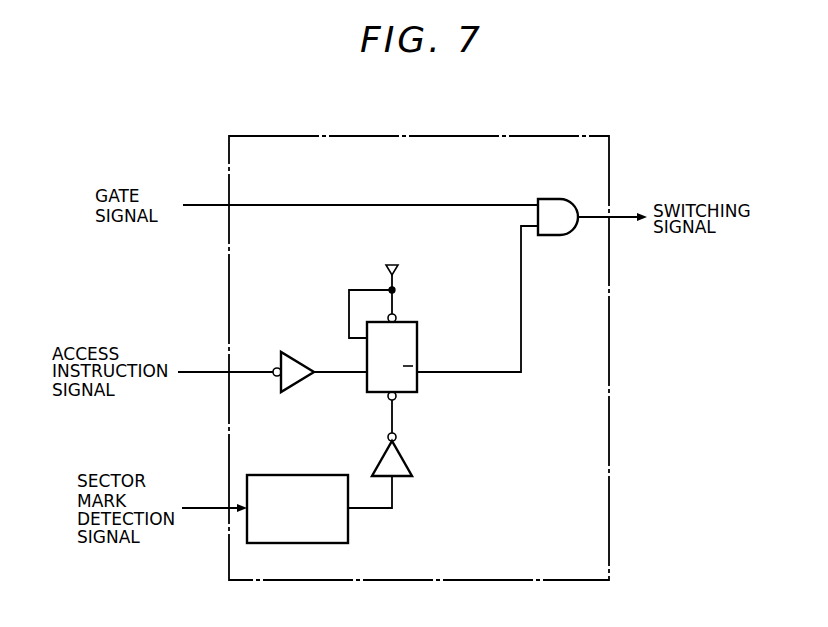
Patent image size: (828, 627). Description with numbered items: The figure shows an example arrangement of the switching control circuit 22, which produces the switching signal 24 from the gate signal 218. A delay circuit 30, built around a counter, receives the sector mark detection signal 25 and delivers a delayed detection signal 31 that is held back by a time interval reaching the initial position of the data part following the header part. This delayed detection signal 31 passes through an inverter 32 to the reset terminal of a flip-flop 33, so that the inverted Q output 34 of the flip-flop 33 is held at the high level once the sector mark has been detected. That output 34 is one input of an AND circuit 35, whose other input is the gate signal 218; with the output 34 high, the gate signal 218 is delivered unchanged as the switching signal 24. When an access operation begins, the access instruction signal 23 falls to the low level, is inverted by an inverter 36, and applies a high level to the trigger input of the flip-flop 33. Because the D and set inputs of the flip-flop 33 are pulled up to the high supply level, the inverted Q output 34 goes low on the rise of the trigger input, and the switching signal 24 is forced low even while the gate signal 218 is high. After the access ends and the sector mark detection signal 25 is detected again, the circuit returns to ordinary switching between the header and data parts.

The switching control circuit 22 is at (513, 133).
The gate signal 218 is at (205, 203).
The access instruction signal 23 is at (205, 370).
The switching signal 24 is at (624, 215).
The sector mark detection signal 25 is at (199, 510).
The delay circuit 30 is at (288, 475).
The delayed detection signal 31 is at (378, 510).
The inverter 32 is at (413, 465).
The flip-flop 33 is at (418, 341).
The inverted Q output 34 is at (472, 374).
The AND circuit 35 is at (560, 198).
The inverter 36 is at (297, 351).